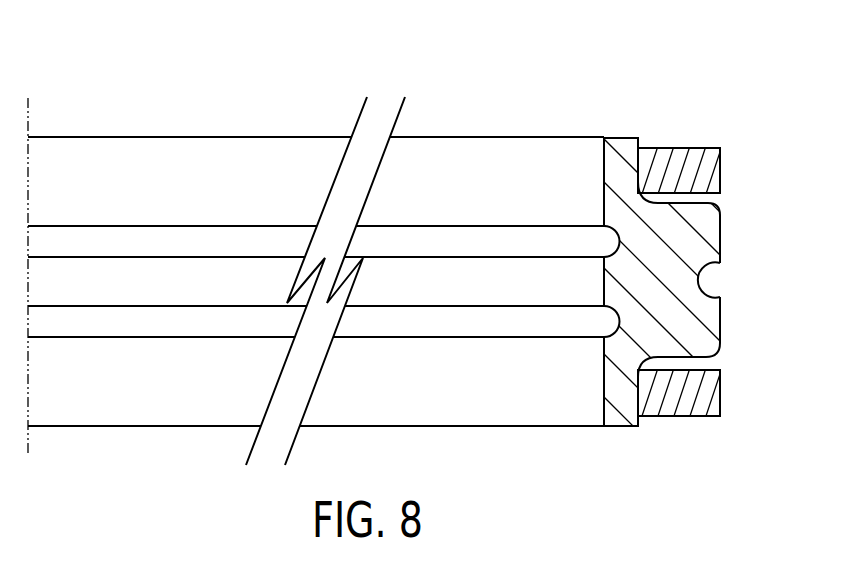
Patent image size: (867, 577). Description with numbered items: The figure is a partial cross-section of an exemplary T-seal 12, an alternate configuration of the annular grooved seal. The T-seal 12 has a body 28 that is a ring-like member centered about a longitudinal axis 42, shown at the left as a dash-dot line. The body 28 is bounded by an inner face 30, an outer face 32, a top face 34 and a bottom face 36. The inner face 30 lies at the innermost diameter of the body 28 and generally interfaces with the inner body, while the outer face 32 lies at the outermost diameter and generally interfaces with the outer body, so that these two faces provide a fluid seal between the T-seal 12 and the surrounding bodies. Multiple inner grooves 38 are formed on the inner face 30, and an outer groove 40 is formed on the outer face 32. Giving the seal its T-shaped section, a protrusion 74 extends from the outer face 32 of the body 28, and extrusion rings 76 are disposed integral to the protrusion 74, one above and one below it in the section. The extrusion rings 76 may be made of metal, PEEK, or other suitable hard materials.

The T-seal 12 is at (624, 66).
The body 28 is at (543, 272).
The inner face 30 is at (603, 197).
The outer face 32 is at (722, 246).
The top face 34 is at (626, 137).
The bottom face 36 is at (623, 428).
The inner grooves 38 is at (609, 239).
The outer groove 40 is at (710, 282).
The longitudinal axis 42 is at (28, 118).
The protrusion 74 is at (703, 319).
The extrusion rings 76 is at (721, 177).